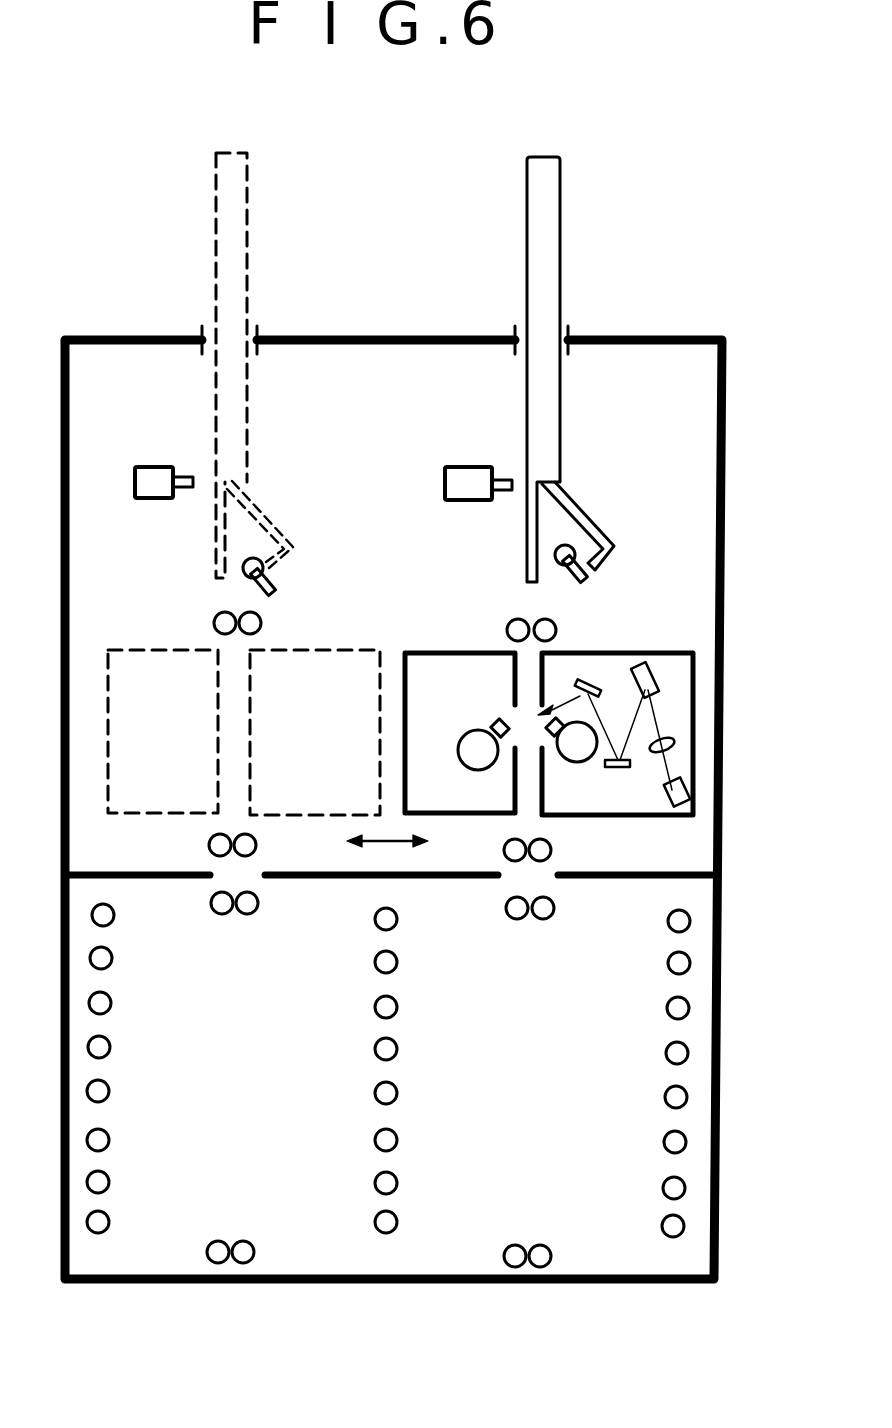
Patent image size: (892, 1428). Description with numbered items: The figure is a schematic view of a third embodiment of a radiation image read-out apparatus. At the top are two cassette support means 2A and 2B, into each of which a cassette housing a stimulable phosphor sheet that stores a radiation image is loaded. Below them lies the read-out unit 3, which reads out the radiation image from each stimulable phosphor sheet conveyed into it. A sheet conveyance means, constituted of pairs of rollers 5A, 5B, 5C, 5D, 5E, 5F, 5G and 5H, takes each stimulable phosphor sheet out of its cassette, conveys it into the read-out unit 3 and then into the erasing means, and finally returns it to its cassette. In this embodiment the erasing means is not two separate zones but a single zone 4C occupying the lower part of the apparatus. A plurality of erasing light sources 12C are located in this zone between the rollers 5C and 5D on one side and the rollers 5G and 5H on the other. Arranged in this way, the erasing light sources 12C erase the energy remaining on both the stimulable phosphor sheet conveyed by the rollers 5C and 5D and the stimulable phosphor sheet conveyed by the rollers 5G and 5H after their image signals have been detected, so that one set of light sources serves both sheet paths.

The cassette support means 2A is at (584, 310).
The cassette support means 2B is at (266, 310).
The read-out unit 3 is at (676, 650).
The single zone 4C is at (603, 1261).
The pair of rollers 5A is at (506, 630).
The pair of rollers 5B is at (552, 850).
The pair of rollers 5C is at (552, 914).
The pair of rollers 5D is at (550, 1247).
The pair of rollers 5E is at (262, 623).
The pair of rollers 5F is at (208, 845).
The pair of rollers 5G is at (215, 913).
The pair of rollers 5H is at (210, 1246).
The erasing light sources 12C is at (398, 1051).